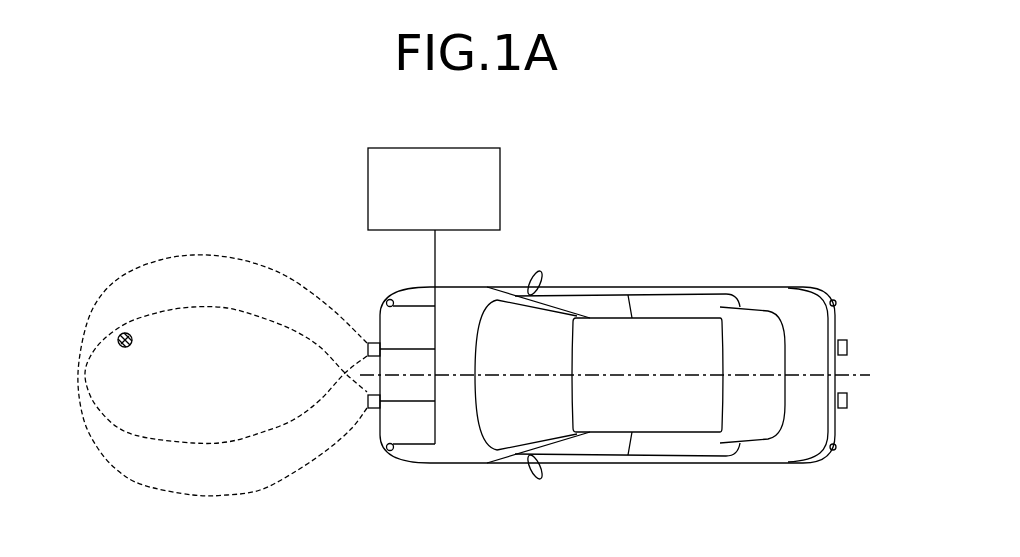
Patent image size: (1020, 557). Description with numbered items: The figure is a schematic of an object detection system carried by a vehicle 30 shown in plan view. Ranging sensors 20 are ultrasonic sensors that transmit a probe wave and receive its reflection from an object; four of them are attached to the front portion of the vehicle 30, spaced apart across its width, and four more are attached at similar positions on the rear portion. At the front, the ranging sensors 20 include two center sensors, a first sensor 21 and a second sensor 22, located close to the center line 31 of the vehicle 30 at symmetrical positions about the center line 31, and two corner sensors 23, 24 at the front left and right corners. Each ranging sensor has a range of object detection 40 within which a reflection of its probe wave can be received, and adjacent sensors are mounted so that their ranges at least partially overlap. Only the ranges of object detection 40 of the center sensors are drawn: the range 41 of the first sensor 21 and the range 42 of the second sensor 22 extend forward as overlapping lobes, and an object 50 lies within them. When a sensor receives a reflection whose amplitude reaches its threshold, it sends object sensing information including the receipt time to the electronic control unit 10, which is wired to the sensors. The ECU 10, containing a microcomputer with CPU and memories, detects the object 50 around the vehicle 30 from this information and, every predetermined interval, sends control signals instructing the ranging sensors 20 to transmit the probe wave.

The electronic control unit (ECU) 10 is at (463, 148).
The ranging sensor 20 is at (584, 359).
The first sensor 21 is at (370, 342).
The second sensor 22 is at (370, 410).
The corner sensor 23 is at (390, 299).
The corner sensor 24 is at (390, 451).
The vehicle 30 is at (655, 287).
The center line 31 is at (632, 376).
The range of object detection 40 is at (222, 376).
The range of object detection of the first sensor 41 is at (122, 272).
The range of object detection of the second sensor 42 is at (123, 477).
The object 50 is at (121, 333).